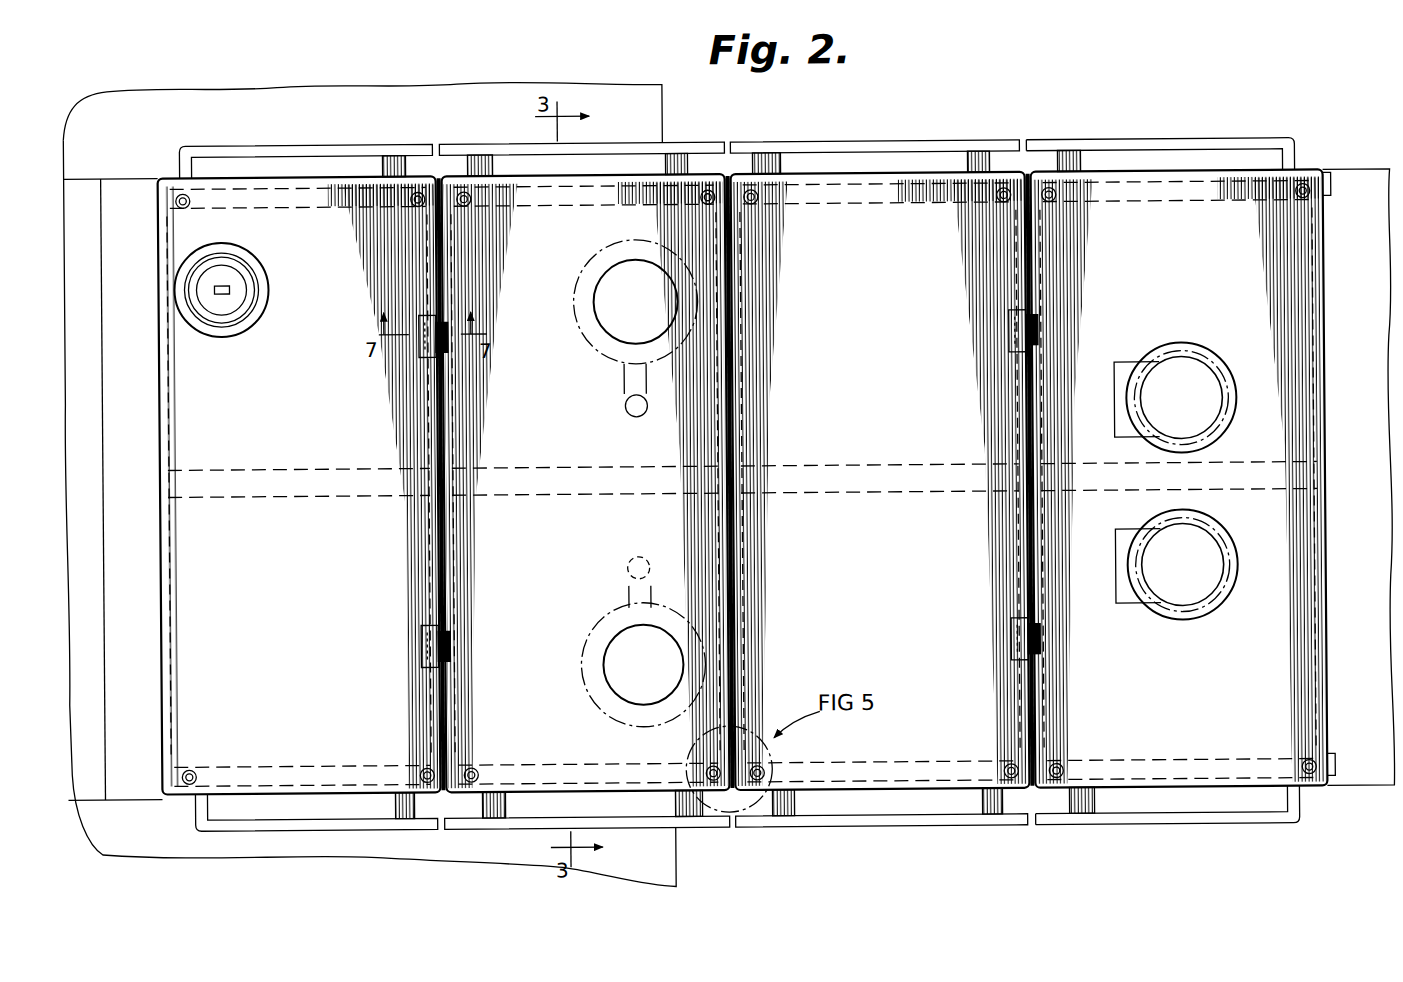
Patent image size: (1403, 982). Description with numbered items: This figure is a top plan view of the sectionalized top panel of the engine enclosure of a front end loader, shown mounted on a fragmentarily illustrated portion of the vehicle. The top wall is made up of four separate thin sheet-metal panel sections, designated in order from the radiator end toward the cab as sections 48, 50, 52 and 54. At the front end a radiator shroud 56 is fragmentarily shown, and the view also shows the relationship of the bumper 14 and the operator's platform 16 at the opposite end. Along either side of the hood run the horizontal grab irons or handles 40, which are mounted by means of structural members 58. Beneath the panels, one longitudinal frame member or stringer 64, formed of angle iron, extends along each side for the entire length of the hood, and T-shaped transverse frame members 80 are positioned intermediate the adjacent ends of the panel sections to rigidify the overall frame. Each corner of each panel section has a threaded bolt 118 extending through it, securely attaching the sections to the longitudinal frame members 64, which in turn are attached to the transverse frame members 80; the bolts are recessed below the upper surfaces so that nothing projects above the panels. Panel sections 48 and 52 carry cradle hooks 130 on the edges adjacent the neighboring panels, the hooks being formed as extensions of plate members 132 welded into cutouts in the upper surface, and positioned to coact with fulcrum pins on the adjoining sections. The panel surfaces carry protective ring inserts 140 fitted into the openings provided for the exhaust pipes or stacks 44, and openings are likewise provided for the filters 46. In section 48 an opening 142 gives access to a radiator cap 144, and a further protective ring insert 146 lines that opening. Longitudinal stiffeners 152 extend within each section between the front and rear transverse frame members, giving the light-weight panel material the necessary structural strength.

The bumper 14 is at (458, 100).
The operator's platform 16 is at (1359, 477).
The horizontal grab irons or handles 40 is at (266, 148).
The exhaust pipes or stacks 44 is at (1126, 364).
The filters 46 is at (600, 258).
The panel section 48 is at (299, 485).
The panel section 50 is at (586, 483).
The panel section 52 is at (880, 481).
The panel section 54 is at (1183, 478).
The radiator shroud 56 is at (126, 489).
The structural members 58 is at (785, 158).
The longitudinal frame members or stringers 64 is at (870, 206).
The T-shaped transverse frame members 80 is at (1040, 390).
The threaded bolts 118 is at (465, 190).
The cradle hooks 130 is at (450, 338).
The plate members 132 is at (420, 348).
The protective ring inserts 140 is at (1192, 348).
The opening 142 is at (252, 305).
The radiator cap 144 is at (240, 276).
The protective ring insert 146 is at (263, 312).
The longitudinal stiffeners 152 is at (262, 500).